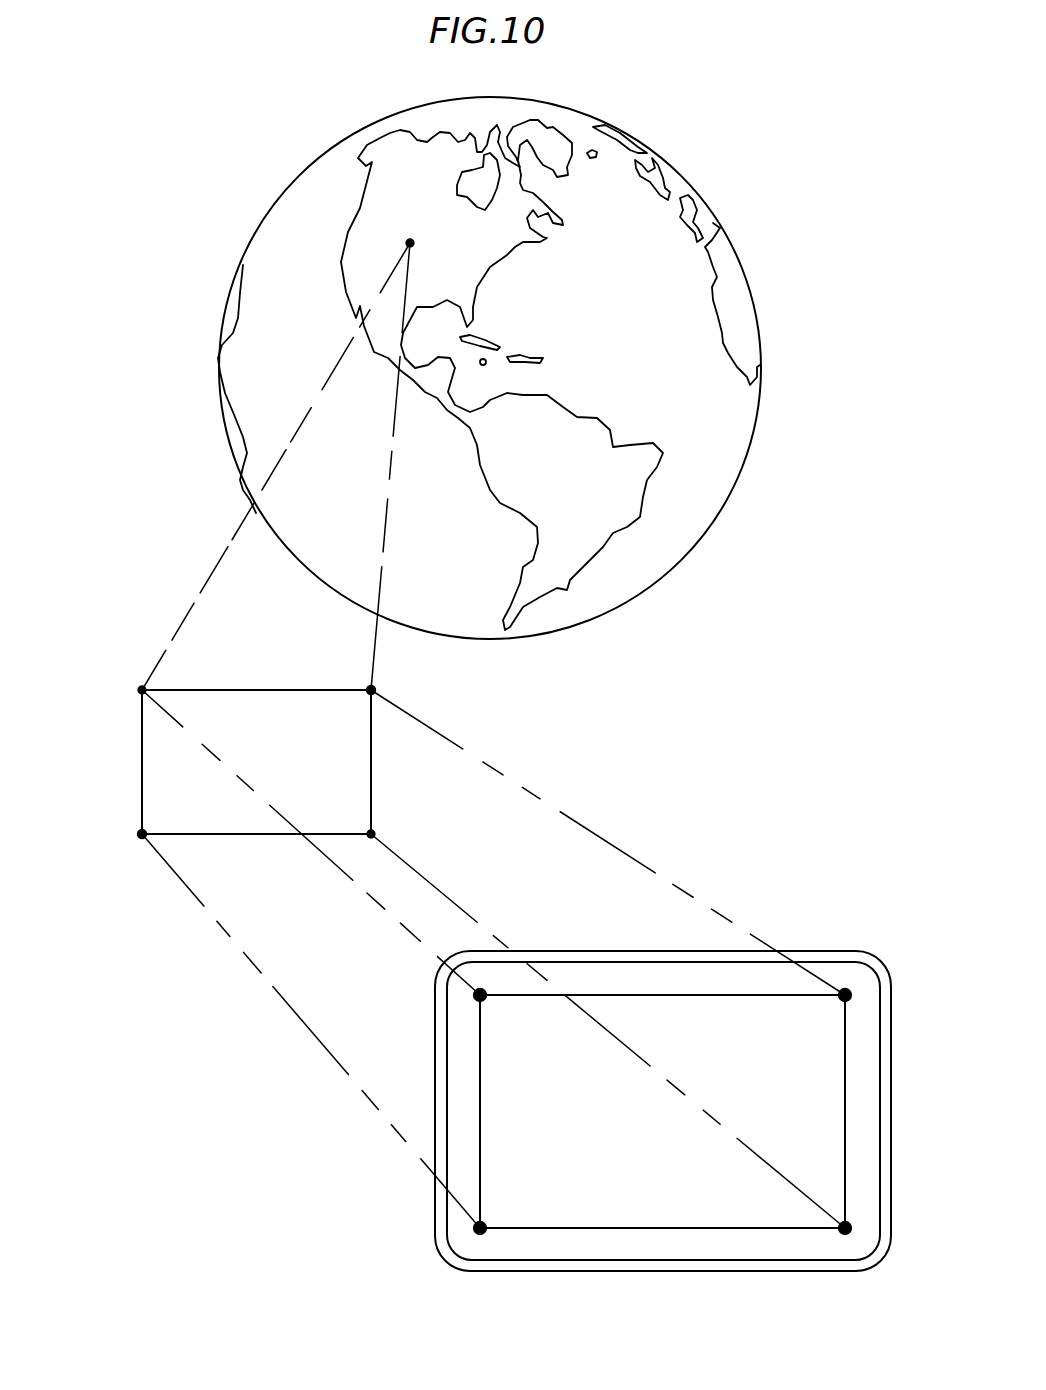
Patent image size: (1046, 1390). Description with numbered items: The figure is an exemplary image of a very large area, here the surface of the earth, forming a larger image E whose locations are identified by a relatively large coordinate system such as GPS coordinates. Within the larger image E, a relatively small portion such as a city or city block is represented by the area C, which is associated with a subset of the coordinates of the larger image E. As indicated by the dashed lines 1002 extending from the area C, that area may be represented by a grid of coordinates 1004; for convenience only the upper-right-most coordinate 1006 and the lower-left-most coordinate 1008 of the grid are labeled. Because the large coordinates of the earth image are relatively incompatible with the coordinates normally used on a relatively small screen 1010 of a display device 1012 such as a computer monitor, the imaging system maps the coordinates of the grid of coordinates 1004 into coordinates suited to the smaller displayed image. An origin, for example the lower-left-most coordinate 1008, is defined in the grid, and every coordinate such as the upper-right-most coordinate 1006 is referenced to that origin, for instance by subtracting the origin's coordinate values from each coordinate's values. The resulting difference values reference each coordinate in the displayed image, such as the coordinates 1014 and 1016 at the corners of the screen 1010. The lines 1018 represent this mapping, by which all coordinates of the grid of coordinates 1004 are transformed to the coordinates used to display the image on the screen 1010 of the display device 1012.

The area C is at (410, 243).
The larger image E is at (603, 250).
The dashed lines 1002 is at (212, 580).
The grid of coordinates 1004 is at (168, 764).
The upper-right-most coordinate 1006 is at (371, 690).
The lower-left-most coordinate 1008 is at (142, 834).
The screen 1010 is at (642, 1202).
The display device 1012 is at (813, 953).
The coordinate 1014 is at (480, 1228).
The coordinate 1016 is at (845, 995).
The lines 1018 is at (535, 790).